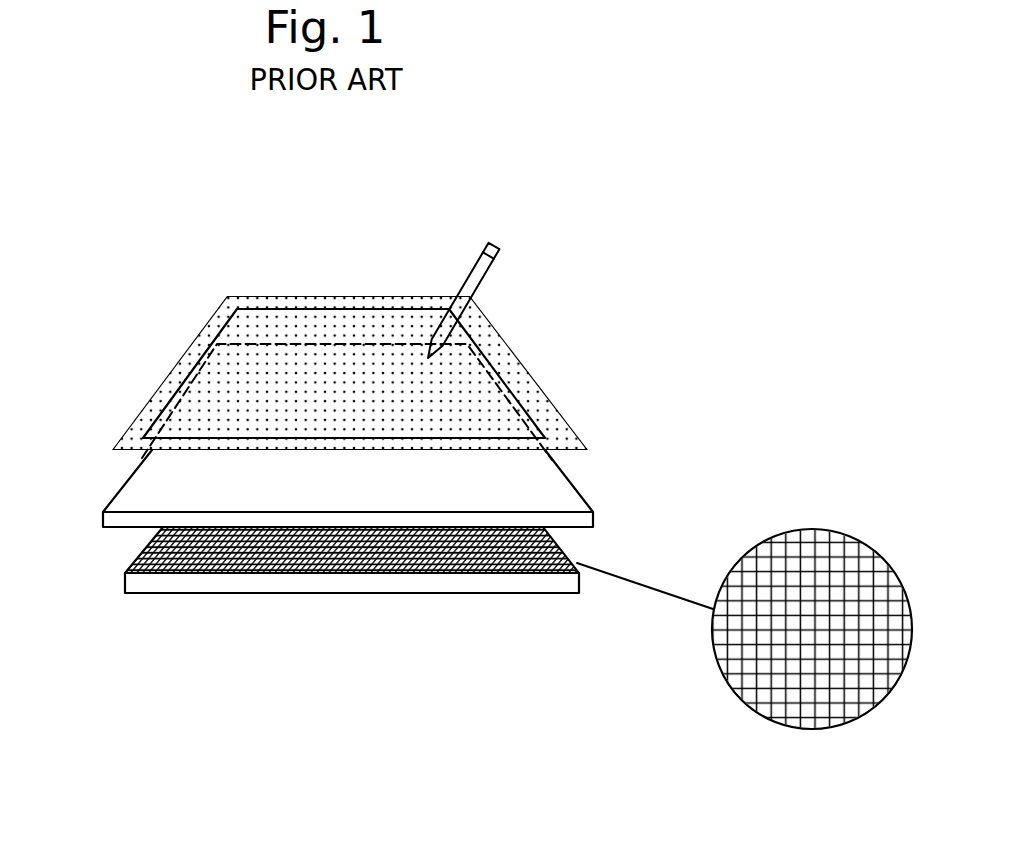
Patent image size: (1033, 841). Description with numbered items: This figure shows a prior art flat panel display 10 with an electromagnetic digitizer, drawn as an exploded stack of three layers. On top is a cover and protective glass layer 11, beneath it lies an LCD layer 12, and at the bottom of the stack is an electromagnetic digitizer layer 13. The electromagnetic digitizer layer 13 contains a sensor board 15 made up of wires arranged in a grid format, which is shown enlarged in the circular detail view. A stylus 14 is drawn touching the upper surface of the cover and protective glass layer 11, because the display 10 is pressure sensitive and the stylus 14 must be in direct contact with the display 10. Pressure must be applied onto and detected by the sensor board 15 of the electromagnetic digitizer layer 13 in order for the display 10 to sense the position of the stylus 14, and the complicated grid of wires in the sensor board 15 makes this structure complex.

The flat panel display 10 is at (93, 443).
The cover and protective glass layer 11 is at (523, 350).
The LCD layer 12 is at (572, 485).
The electromagnetic digitizer layer 13 is at (575, 558).
The stylus 14 is at (490, 241).
The sensor board 15 is at (768, 717).